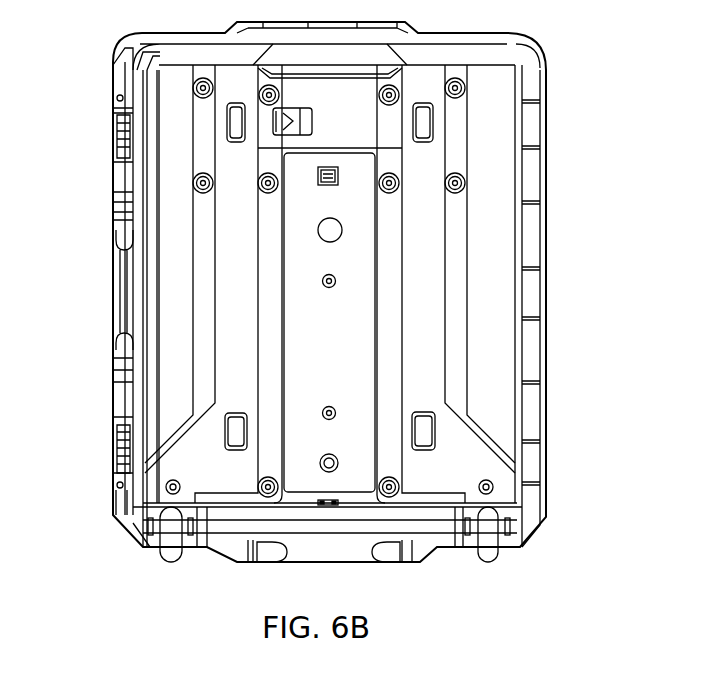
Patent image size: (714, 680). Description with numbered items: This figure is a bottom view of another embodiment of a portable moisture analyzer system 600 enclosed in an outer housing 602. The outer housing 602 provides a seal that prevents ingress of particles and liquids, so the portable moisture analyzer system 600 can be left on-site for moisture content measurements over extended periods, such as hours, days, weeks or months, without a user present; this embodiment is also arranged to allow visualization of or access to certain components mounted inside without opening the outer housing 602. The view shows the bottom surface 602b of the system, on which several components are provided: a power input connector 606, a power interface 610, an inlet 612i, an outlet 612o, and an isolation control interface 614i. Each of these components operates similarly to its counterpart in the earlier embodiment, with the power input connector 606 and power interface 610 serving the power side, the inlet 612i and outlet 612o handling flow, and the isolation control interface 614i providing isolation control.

The portable moisture analyzer system 600 is at (538, 30).
The outer housing 602 is at (290, 562).
The bottom surface 602b is at (235, 95).
The power interface 610 is at (318, 178).
The isolation control interface 614i is at (318, 230).
The outlet 612o is at (322, 281).
The inlet 612i is at (322, 413).
The power input connector 606 is at (320, 463).